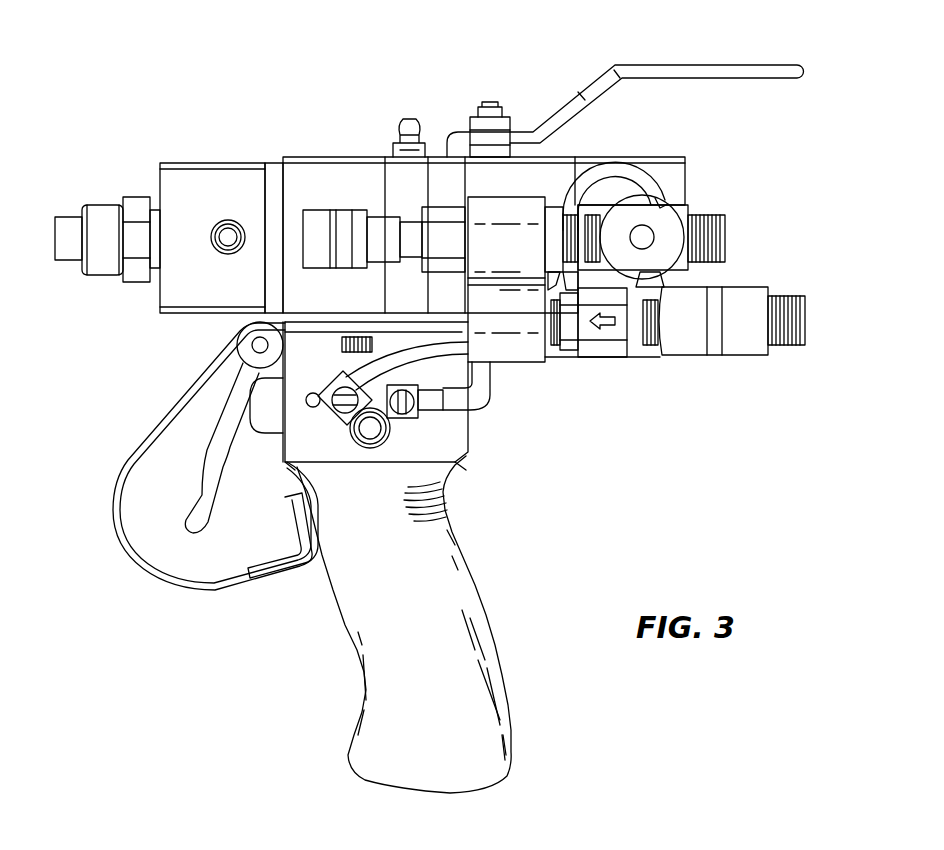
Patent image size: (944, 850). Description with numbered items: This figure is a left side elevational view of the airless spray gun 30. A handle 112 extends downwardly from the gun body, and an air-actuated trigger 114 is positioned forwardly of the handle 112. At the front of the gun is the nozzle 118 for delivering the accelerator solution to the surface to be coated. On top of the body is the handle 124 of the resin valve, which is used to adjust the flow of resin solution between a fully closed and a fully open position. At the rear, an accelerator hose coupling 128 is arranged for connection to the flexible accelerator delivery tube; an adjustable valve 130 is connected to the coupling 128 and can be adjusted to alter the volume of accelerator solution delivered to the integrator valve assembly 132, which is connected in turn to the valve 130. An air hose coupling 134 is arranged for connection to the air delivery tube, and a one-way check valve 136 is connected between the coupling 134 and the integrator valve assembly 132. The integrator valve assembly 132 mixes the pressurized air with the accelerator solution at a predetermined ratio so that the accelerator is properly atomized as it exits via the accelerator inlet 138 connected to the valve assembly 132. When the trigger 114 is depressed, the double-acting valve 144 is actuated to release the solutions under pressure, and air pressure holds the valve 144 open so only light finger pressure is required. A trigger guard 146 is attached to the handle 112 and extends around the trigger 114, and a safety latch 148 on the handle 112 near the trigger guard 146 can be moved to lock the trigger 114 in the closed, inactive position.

The airless spray gun 30 is at (349, 94).
The handle 112 is at (473, 597).
The air-actuated trigger 114 is at (208, 463).
The nozzle 118 is at (108, 210).
The handle 124 is at (683, 65).
The accelerator hose coupling 128 is at (727, 240).
The adjustable valve 130 is at (665, 210).
The integrator valve assembly 132 is at (512, 352).
The air hose coupling 134 is at (788, 298).
The one-way check valve 136 is at (607, 345).
The accelerator inlet 138 is at (322, 210).
The double-acting valve 144 is at (243, 437).
The trigger guard 146 is at (207, 590).
The safety latch 148 is at (292, 568).